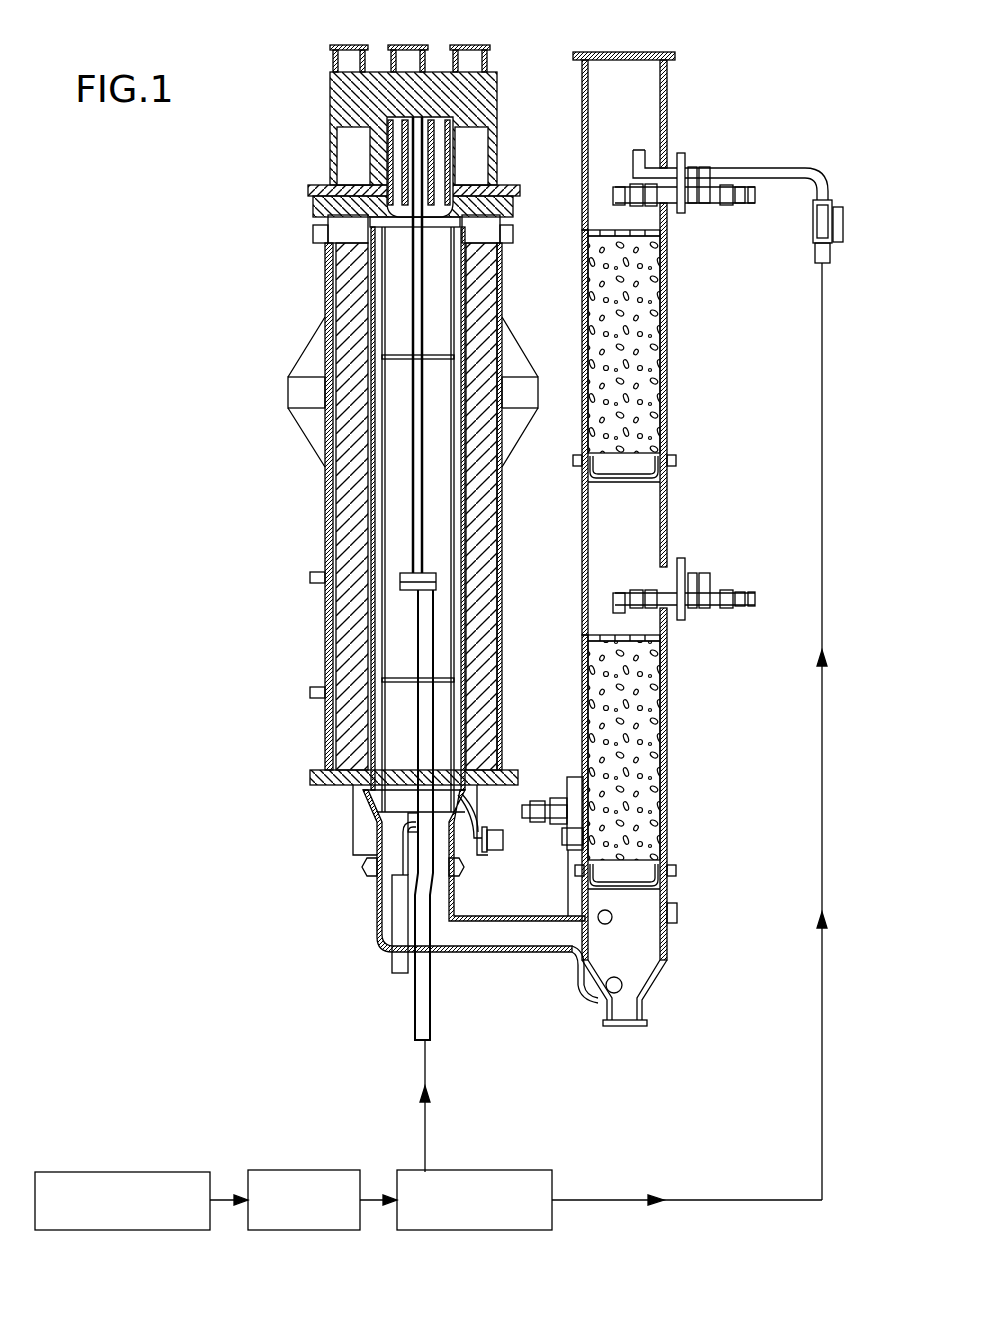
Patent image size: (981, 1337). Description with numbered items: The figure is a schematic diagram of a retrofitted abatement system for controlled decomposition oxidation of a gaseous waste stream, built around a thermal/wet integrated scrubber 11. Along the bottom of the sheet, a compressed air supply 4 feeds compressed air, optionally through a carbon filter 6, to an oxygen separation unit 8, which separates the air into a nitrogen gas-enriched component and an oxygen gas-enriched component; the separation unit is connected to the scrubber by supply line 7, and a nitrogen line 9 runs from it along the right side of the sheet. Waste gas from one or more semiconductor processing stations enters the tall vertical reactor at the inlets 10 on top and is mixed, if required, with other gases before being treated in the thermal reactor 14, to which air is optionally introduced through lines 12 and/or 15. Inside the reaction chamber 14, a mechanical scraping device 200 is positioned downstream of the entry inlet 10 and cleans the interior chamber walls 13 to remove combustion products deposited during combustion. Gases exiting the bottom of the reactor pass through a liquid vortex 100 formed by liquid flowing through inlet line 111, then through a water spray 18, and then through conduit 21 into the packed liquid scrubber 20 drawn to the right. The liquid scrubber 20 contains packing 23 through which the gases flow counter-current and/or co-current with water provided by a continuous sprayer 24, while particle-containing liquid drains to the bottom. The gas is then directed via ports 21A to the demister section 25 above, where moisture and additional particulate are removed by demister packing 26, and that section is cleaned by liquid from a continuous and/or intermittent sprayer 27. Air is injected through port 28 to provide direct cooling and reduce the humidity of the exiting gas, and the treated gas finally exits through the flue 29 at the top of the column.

The compressed air supply 4 is at (152, 1170).
The carbon filter 6 is at (320, 1170).
The gas supply line 7 is at (430, 1056).
The oxygen separation unit 8 is at (496, 1170).
The nitrogen supply line 9 is at (818, 1040).
The inlets 10 is at (333, 70).
The thermal/wet integrated scrubber 11 is at (265, 306).
The line 12 is at (308, 194).
The interior chamber walls 13 is at (365, 645).
The thermal reactor 14 is at (400, 520).
The line 15 is at (418, 1028).
The water spray 18 is at (405, 834).
The packed liquid scrubber 20 is at (668, 758).
The conduit 21 is at (478, 942).
The ports 21A is at (733, 598).
The packing 23 is at (655, 700).
The continuous sprayer 24 is at (617, 594).
The demister section 25 is at (668, 345).
The demister packing 26 is at (655, 295).
The continuous and/or intermittent sprayer 27 is at (617, 200).
The port 28 is at (644, 160).
The flue 29 is at (639, 104).
The liquid vortex 100 is at (380, 822).
The inlet line 111 is at (470, 838).
The mechanical scraping device 200 is at (385, 474).